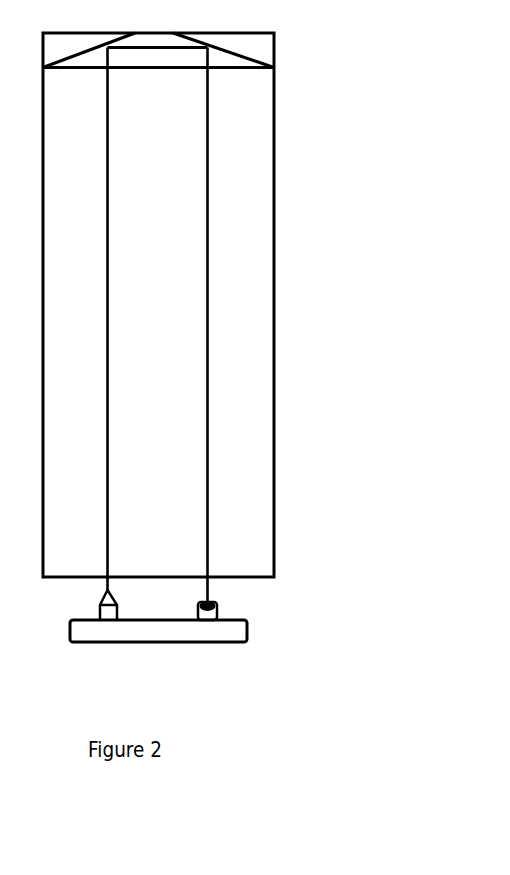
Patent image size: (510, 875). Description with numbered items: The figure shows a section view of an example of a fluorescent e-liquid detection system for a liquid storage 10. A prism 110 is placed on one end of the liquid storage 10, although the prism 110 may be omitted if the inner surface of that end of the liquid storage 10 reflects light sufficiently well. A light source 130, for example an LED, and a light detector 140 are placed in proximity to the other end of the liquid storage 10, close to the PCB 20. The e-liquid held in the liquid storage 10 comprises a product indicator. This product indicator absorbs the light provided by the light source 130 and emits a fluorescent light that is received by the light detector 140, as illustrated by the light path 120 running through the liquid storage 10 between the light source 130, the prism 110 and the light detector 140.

The liquid storage 10 is at (275, 323).
The prism 110 is at (222, 62).
The light path 120 is at (208, 177).
The light source 130 is at (122, 605).
The light detector 140 is at (217, 612).
The PCB 20 is at (160, 628).